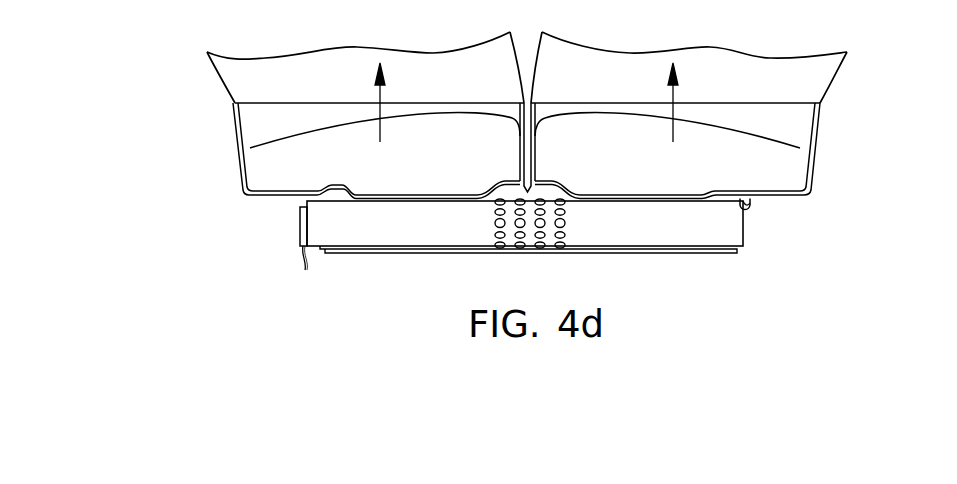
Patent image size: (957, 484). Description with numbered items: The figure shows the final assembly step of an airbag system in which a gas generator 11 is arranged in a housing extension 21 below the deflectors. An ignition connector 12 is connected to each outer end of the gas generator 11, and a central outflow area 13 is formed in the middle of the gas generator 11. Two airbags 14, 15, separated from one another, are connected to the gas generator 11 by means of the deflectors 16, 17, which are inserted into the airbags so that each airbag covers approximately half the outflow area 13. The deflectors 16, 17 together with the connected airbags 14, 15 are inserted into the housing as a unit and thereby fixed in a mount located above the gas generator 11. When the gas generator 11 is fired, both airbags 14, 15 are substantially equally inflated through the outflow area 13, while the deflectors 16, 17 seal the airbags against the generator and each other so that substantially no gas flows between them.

The gas generator 11 is at (722, 220).
The ignition connector 12 is at (300, 233).
The outflow area 13 is at (530, 228).
The airbag 14 is at (250, 80).
The airbag 15 is at (818, 72).
The deflector 16 is at (325, 183).
The deflector 17 is at (740, 195).
The housing extension 21 is at (660, 253).